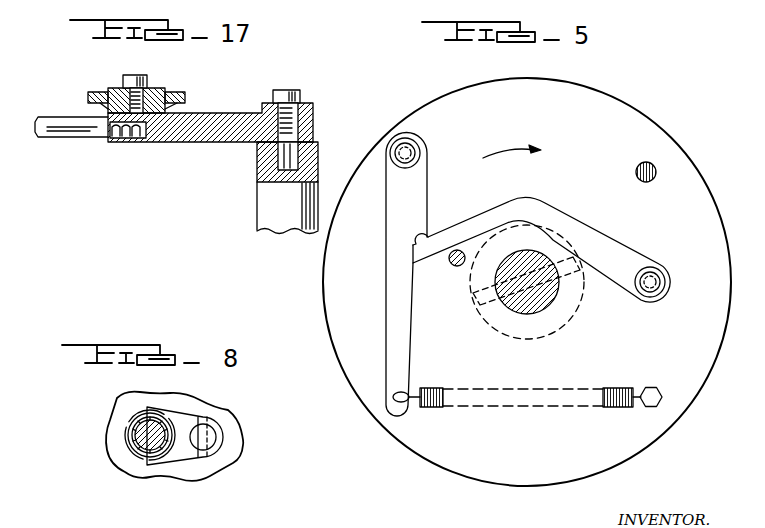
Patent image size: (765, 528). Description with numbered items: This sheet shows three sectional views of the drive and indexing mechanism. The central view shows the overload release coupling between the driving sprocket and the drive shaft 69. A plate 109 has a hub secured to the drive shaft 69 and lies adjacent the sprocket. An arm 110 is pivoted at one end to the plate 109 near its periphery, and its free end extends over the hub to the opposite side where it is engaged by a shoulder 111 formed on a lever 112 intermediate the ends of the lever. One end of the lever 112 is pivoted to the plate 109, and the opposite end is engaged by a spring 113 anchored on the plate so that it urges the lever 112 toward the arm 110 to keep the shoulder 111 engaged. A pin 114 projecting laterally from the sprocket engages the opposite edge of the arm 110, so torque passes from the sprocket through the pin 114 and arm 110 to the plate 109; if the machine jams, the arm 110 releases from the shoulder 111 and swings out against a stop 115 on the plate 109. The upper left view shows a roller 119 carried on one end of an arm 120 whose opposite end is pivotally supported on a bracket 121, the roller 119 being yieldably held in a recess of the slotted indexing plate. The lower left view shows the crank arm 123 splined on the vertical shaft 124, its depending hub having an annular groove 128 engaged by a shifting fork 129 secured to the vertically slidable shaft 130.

In FIG. 17, the roller 119 is at (182, 96).
In FIG. 17, the arm 120 is at (215, 121).
In FIG. 17, the bracket 121 is at (318, 156).
In FIG. 5, the plate 109 is at (356, 387).
In FIG. 5, the arm 110 is at (555, 214).
In FIG. 5, the shoulder 111 is at (434, 236).
In FIG. 5, the lever 112 is at (392, 259).
In FIG. 5, the spring 113 is at (442, 390).
In FIG. 5, the pin 114 is at (454, 268).
In FIG. 5, the stop 115 is at (640, 163).
In FIG. 5, the drive shaft 69 is at (558, 292).
In FIG. 8, the crank arm 123 is at (134, 460).
In FIG. 8, the vertical shaft 124 is at (138, 463).
In FIG. 8, the annular groove 128 is at (128, 447).
In FIG. 8, the shifting fork 129 is at (183, 457).
In FIG. 8, the vertically slidable shaft 130 is at (214, 428).